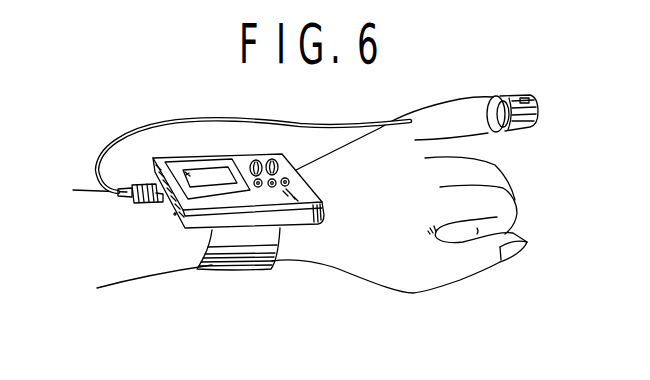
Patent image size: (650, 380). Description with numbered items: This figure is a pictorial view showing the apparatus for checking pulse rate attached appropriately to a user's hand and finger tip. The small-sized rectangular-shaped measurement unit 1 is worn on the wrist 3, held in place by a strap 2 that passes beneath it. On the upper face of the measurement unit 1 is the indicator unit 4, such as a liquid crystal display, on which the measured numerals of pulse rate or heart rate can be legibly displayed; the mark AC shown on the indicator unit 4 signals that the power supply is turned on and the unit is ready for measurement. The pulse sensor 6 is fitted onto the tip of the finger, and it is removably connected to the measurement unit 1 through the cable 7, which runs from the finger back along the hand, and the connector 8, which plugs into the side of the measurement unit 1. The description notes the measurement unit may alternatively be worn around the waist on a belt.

The measurement unit 1 is at (257, 153).
The wrist strap 2 is at (250, 252).
The wrist 3 is at (177, 263).
The indicator unit 4 is at (203, 168).
The pulse sensor 6 is at (511, 92).
The cable 7 is at (330, 123).
The connector 8 is at (157, 200).